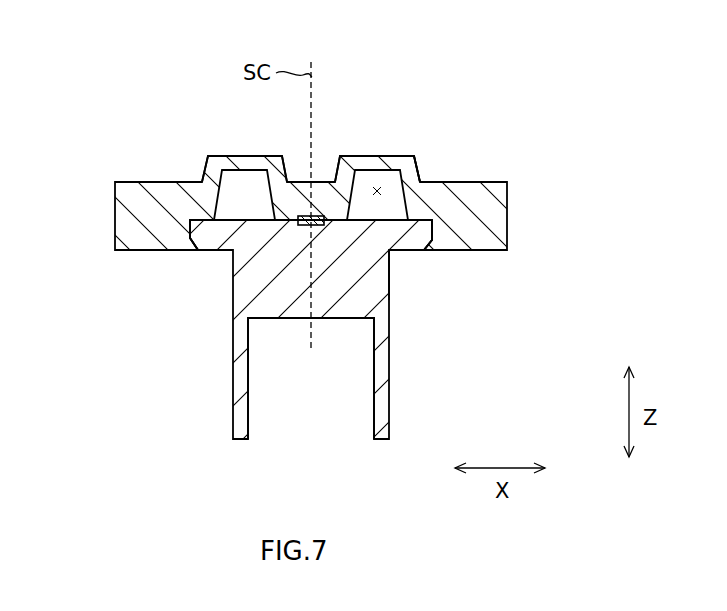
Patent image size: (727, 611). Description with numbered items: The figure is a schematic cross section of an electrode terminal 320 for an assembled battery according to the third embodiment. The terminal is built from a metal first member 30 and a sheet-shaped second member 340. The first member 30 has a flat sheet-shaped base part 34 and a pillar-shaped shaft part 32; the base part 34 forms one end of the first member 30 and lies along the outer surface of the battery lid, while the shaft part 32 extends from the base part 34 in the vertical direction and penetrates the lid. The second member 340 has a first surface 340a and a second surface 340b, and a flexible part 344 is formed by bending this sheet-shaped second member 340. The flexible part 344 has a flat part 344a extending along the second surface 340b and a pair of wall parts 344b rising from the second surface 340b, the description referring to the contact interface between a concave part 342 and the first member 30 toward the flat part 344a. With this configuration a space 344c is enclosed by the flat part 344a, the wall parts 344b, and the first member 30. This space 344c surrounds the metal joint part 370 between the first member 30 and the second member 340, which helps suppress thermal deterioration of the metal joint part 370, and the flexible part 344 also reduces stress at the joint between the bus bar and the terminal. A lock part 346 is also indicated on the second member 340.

The electrode terminal 320 is at (73, 30).
The second member 340 is at (491, 180).
The first surface 340a is at (137, 252).
The second surface 340b is at (150, 182).
The flexible part 344 is at (228, 156).
The flat part 344a is at (388, 156).
The wall parts 344b is at (418, 168).
The space 344c is at (375, 185).
The lock part 346 is at (188, 252).
The concave part 342 is at (423, 233).
The first member 30 is at (224, 310).
The base part 34 is at (400, 240).
The shaft part 32 is at (340, 293).
The metal joint part 370 is at (302, 227).